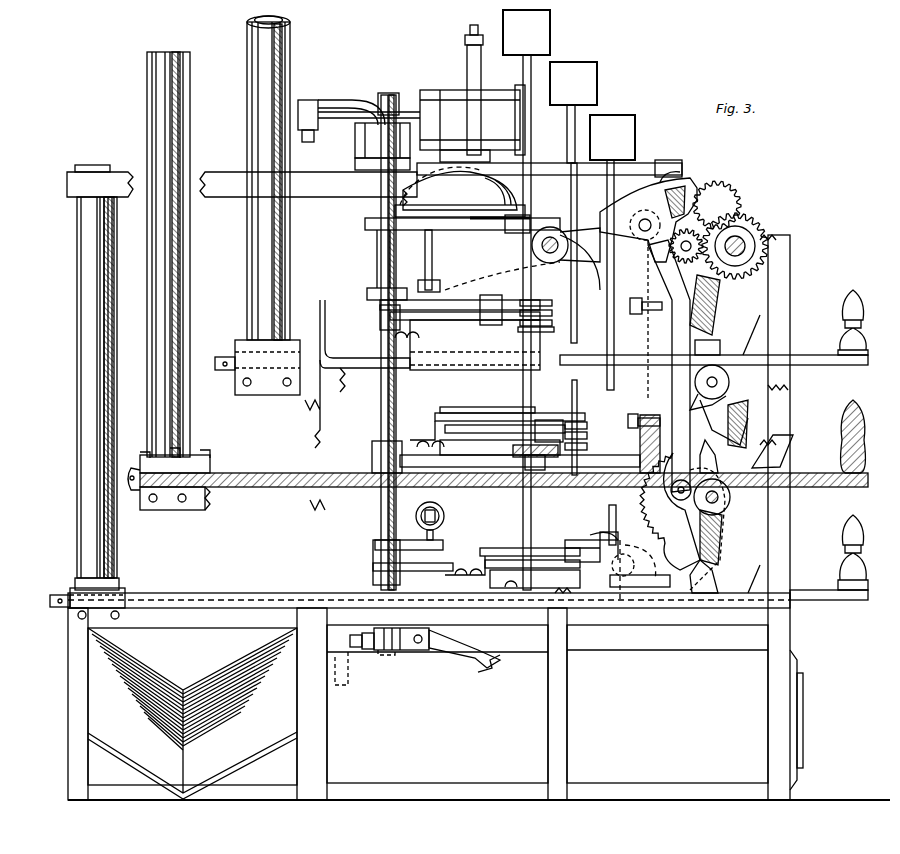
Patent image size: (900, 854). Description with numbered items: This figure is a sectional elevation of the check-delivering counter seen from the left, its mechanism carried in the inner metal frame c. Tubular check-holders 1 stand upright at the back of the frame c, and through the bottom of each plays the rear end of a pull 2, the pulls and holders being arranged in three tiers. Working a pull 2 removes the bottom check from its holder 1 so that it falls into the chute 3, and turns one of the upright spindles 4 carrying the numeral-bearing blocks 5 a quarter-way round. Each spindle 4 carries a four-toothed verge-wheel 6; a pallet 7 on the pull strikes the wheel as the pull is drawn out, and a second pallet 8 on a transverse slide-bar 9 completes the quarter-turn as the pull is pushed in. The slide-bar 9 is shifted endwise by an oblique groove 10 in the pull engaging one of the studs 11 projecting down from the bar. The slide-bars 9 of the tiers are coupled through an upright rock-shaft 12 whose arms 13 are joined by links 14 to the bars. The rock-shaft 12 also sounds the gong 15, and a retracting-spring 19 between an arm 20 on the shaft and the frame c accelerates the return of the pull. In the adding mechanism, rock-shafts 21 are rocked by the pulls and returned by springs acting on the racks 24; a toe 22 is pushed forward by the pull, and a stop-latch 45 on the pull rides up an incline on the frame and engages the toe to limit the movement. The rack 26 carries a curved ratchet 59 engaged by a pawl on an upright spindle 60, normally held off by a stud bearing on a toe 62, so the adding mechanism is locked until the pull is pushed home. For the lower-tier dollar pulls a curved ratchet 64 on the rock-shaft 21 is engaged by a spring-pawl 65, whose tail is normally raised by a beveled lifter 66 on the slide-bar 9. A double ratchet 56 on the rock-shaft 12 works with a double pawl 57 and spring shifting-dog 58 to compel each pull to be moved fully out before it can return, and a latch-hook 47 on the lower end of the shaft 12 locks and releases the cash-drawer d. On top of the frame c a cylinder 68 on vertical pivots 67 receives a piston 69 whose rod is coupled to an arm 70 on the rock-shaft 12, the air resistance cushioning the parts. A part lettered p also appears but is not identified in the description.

The tubular check-holder 1 is at (76, 366).
The pull 2 is at (226, 476).
The chute 3 is at (205, 681).
The upright spindle 4 is at (531, 134).
The numeral-bearing block 5 is at (550, 30).
The verge-wheel 6 is at (563, 370).
The pallet 7 is at (408, 312).
The pallet 8 is at (500, 296).
The slide-bar 9 is at (478, 325).
The oblique groove 10 is at (488, 473).
The stud 11 is at (520, 468).
The upright rock-shaft 12 is at (388, 96).
The arm 13 is at (378, 312).
The link 14 is at (515, 413).
The gong 15 is at (460, 192).
The retracting-spring 19 is at (442, 508).
The arm 20 is at (443, 540).
The rock-shaft 21 is at (729, 382).
The toe 22 is at (722, 290).
The rack 24 is at (653, 217).
The rack 26 is at (688, 418).
The stop-latch 45 is at (710, 345).
The latch-hook 47 is at (455, 650).
The double ratchet 56 is at (455, 226).
The double pawl 57 is at (512, 228).
The spring shifting-dog 58 is at (578, 228).
The curved ratchet 59 is at (470, 285).
The upright spindle 60 is at (425, 246).
The toe 62 is at (404, 290).
The curved ratchet 64 is at (682, 521).
The spring-pawl 65 is at (700, 588).
The beveled lifter 66 is at (582, 550).
The vertical pivot 67 is at (476, 38).
The cylinder 68 is at (440, 92).
The piston 69 is at (322, 122).
The arm 70 is at (332, 100).
The inner metal frame c is at (308, 184).
The drawer d is at (806, 712).
The bracket p is at (357, 405).